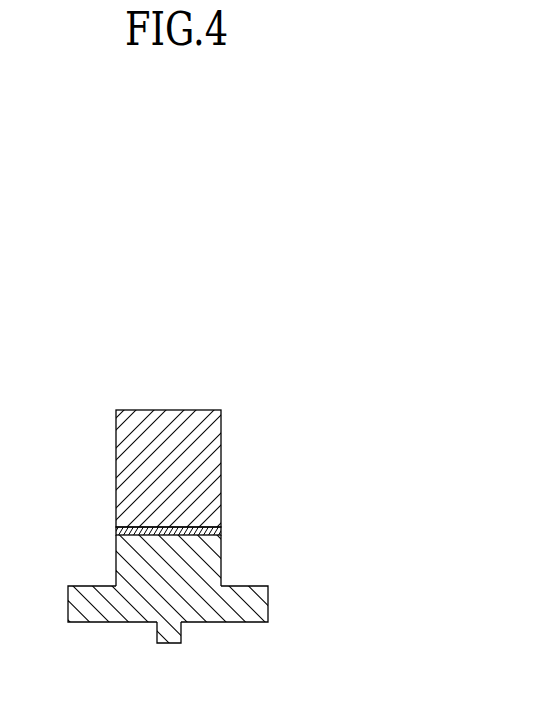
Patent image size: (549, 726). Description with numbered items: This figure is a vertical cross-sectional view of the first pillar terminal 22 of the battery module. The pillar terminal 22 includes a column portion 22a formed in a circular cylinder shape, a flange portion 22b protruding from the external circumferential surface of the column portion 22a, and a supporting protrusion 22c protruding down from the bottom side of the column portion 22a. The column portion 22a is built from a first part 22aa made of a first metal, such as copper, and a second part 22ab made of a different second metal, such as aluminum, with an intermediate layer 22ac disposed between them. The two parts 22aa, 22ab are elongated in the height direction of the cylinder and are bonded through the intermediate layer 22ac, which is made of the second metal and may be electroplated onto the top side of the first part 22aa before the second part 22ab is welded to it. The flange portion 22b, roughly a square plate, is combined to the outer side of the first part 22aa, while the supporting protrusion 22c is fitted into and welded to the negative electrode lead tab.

The first pillar terminal 22 is at (263, 377).
The column portion 22a is at (326, 428).
The second part 22ab is at (207, 438).
The intermediate layer 22ac is at (193, 533).
The first part 22aa is at (207, 555).
The flange portion 22b is at (258, 603).
The supporting protrusion 22c is at (167, 637).